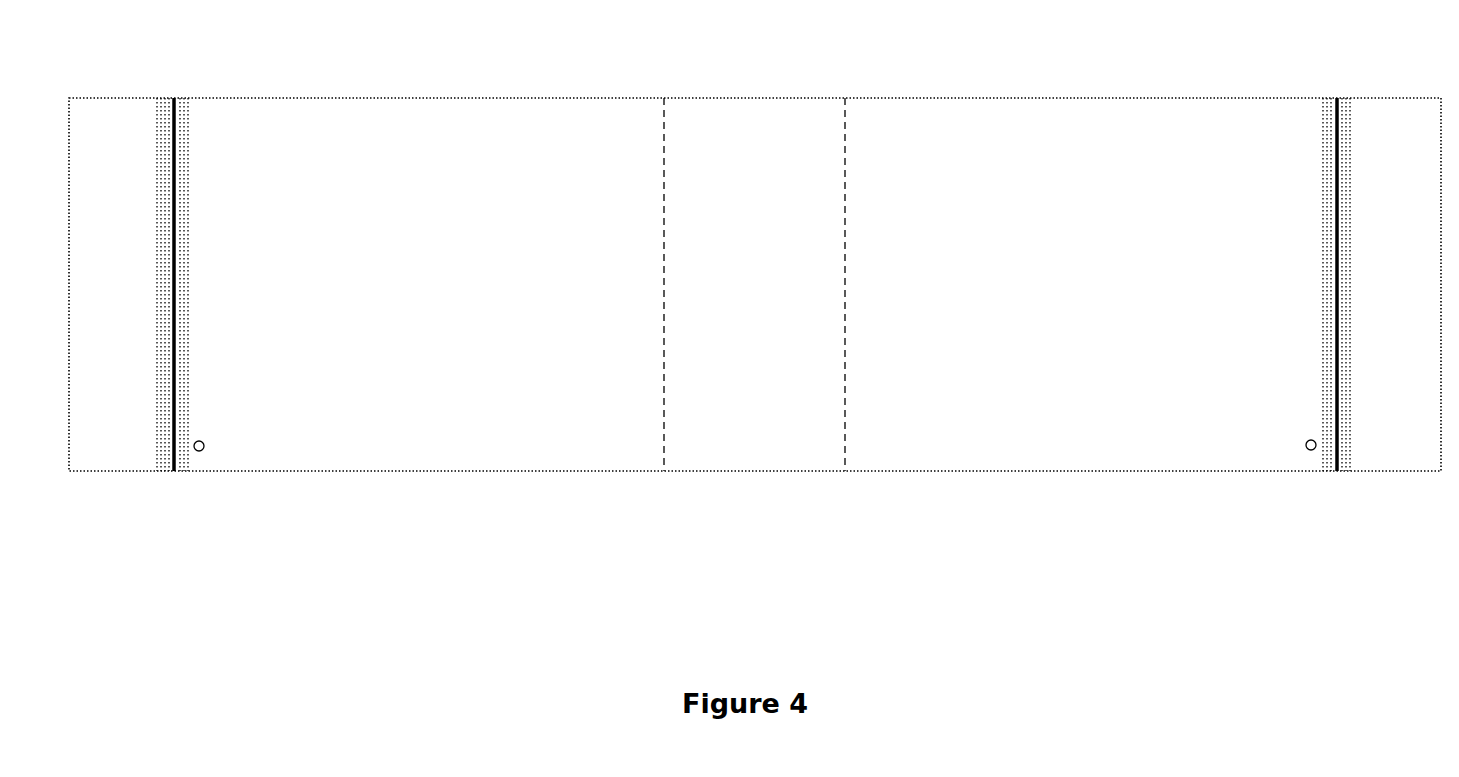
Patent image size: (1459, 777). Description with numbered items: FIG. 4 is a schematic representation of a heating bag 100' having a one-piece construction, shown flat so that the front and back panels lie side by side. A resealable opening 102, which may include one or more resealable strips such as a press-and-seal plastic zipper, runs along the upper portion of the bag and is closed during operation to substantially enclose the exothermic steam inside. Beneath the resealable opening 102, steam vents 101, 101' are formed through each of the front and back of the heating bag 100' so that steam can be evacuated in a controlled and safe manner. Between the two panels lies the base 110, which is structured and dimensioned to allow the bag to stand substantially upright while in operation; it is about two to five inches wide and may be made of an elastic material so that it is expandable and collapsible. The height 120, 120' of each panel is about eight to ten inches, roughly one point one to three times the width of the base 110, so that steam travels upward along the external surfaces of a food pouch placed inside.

The heating bag 100' is at (755, 252).
The steam vent 101 is at (233, 496).
The steam vent 101' is at (1276, 499).
The resealable opening 102 is at (165, 402).
The base 110 is at (666, 491).
The height 120 is at (423, 249).
The height 120' is at (1091, 249).